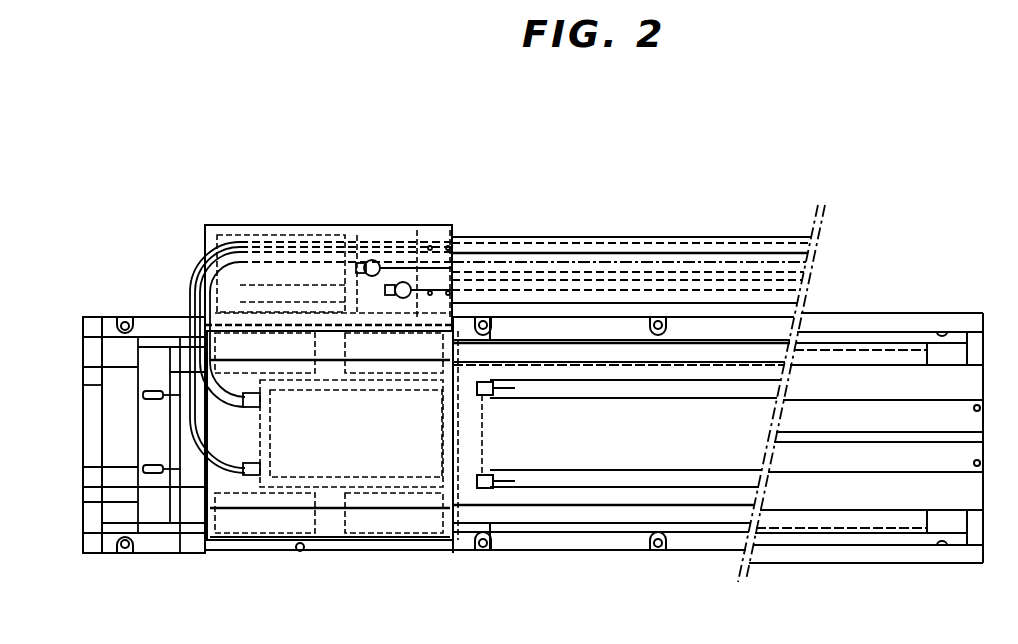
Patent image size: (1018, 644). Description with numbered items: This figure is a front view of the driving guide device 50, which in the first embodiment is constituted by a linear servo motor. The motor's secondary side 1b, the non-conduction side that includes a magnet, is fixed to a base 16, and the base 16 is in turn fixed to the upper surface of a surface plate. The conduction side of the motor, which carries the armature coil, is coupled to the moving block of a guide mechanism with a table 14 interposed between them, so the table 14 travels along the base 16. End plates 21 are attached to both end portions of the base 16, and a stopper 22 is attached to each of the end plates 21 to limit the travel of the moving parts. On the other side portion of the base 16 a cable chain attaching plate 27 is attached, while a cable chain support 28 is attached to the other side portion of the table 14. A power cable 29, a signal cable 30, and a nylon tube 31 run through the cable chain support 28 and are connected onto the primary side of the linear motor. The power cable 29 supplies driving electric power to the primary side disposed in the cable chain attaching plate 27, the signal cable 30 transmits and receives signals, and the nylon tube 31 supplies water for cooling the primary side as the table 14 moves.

The driving guide device 50 is at (232, 183).
The cable chain support 28 is at (382, 224).
The cable chain attaching plate 27 is at (722, 236).
The power cable 29 is at (607, 252).
The signal cable 30 is at (661, 258).
The nylon tube 31 is at (484, 283).
The end plate 21 is at (95, 317).
The stopper 22 is at (113, 442).
The table 14 is at (330, 528).
The secondary side 1b is at (545, 435).
The base 16 is at (830, 556).